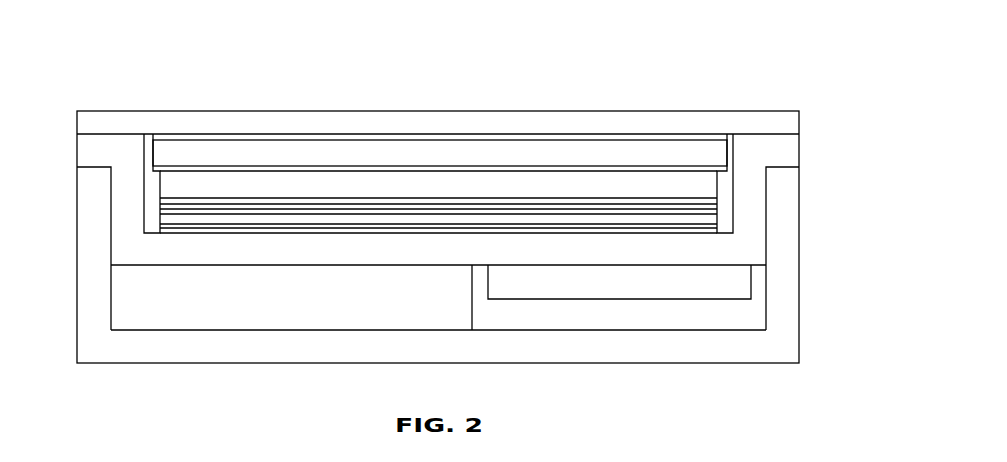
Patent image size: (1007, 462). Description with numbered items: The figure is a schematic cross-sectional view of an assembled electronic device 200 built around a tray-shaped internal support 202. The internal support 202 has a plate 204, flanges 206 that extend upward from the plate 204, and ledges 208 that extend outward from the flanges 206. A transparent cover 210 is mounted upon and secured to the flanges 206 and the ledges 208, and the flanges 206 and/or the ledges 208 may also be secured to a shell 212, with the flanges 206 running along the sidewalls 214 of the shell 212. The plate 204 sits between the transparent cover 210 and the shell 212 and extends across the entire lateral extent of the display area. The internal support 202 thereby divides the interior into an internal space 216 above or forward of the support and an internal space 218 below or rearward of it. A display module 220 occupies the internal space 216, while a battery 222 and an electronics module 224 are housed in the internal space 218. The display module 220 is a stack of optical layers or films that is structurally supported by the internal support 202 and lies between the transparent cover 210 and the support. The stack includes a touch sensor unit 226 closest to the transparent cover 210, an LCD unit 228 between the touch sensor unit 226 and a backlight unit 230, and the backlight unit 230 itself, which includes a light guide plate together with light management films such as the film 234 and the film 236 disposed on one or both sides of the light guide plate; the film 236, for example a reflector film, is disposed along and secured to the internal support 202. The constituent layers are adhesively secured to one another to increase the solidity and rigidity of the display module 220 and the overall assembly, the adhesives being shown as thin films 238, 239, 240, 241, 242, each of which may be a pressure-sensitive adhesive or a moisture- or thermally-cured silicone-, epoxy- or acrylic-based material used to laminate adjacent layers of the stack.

The electronic device 200 is at (778, 68).
The internal support 202 is at (727, 266).
The plate 204 is at (471, 259).
The flanges 206 is at (759, 215).
The ledges 208 is at (782, 150).
The transparent cover 210 is at (386, 112).
The shell 212 is at (283, 364).
The sidewalls 214 is at (87, 262).
The internal space 216 is at (132, 182).
The internal space 218 is at (655, 334).
The display module 220 is at (745, 193).
The battery 222 is at (308, 305).
The electronics module 224 is at (626, 290).
The touch sensor unit 226 is at (451, 162).
The LCD unit 228 is at (451, 195).
The backlight unit 230 is at (538, 217).
The light management film 234 is at (163, 205).
The light management film 236 is at (144, 234).
The adhesive film 238 is at (148, 138).
The adhesive film 239 is at (231, 169).
The adhesive film 240 is at (233, 199).
The adhesive film 241 is at (292, 210).
The adhesive film 242 is at (342, 226).